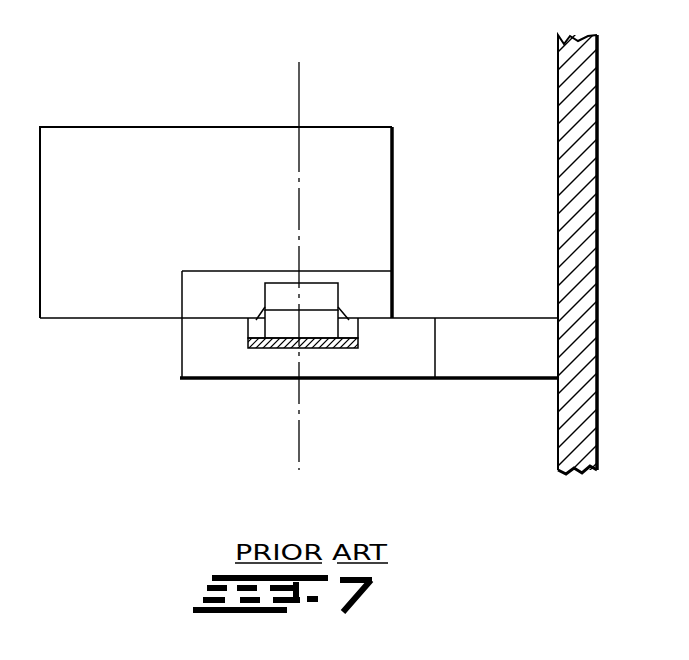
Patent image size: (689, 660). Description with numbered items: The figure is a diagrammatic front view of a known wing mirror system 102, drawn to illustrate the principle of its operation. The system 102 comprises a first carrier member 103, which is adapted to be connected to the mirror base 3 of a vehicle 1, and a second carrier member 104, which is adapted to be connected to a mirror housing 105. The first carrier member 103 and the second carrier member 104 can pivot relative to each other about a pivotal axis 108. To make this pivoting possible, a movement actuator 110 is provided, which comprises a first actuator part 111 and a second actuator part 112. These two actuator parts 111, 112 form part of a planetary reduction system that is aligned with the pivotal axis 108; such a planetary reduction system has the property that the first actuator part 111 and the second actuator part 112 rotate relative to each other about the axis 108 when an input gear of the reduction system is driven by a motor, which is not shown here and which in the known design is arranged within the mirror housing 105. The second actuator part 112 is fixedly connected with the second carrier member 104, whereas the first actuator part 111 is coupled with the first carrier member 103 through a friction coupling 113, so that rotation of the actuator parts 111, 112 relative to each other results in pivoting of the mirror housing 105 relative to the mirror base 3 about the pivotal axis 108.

The vehicle 1 is at (557, 412).
The mirror base 3 is at (500, 358).
The wing mirror system 102 is at (406, 210).
The first carrier member 103 is at (410, 366).
The second carrier member 104 is at (373, 298).
The mirror housing 105 is at (204, 210).
The pivotal axis 108 is at (300, 85).
The movement actuator 110 is at (204, 370).
The first actuator part 111 is at (270, 315).
The second actuator part 112 is at (291, 292).
The friction coupling 113 is at (343, 349).